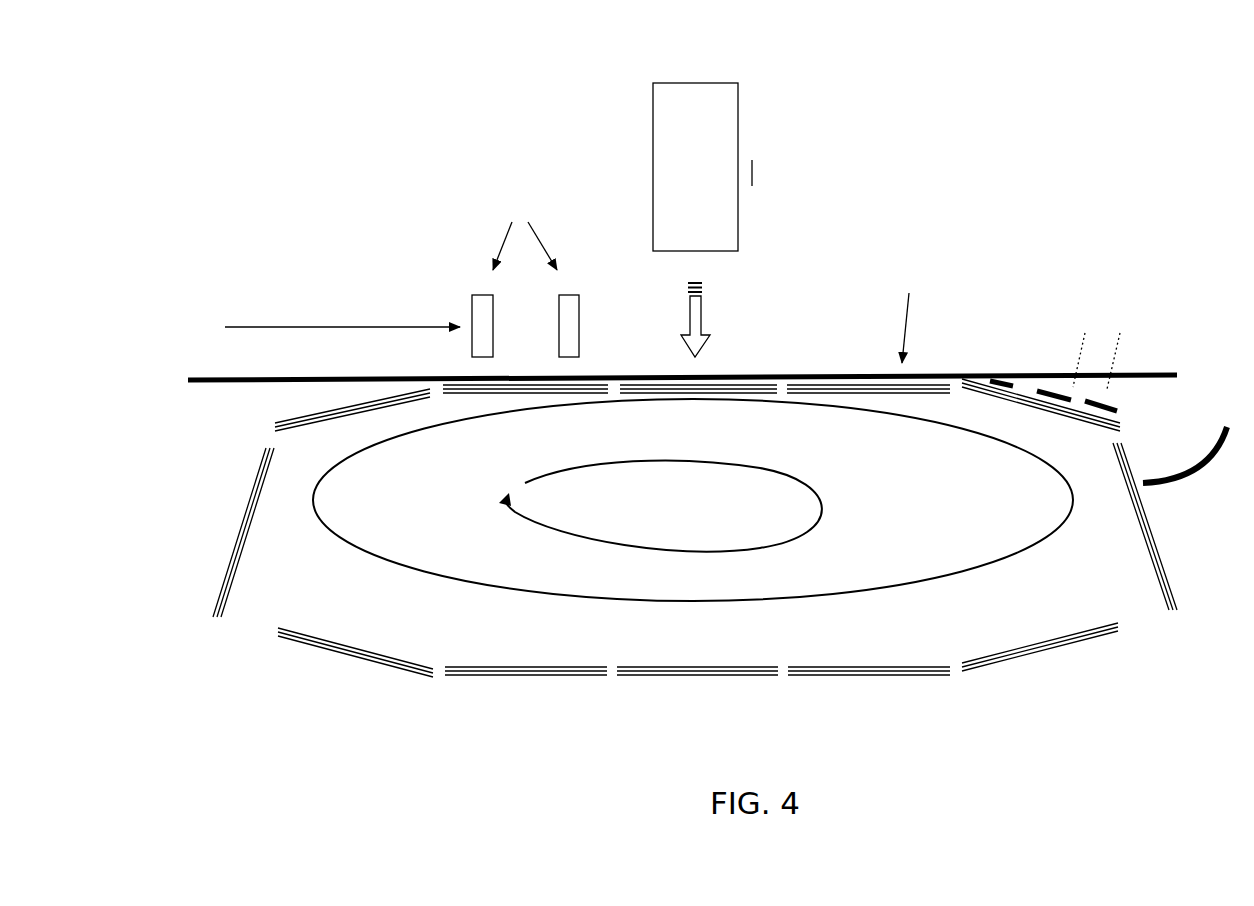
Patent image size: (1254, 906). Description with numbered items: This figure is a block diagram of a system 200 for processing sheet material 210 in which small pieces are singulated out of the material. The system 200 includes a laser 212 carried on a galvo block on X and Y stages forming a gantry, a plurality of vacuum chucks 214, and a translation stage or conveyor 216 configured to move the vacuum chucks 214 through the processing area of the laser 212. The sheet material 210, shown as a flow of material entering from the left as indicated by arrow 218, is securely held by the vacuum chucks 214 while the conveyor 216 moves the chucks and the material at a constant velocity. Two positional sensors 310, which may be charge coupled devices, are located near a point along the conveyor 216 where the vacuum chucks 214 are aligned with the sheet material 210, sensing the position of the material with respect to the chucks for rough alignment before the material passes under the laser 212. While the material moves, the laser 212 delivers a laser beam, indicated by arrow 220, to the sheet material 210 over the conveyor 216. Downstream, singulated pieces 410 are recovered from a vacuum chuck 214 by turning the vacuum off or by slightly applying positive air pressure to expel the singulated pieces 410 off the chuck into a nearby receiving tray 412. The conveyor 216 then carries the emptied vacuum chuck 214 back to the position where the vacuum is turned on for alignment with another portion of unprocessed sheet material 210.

The system 200 is at (424, 86).
The laser 212 is at (738, 100).
The arrow indicating laser beam 220 is at (702, 297).
The arrow indicating movement of sheet material 218 is at (417, 327).
The positional sensors 310 is at (558, 343).
The sheet material 210 is at (1165, 367).
The singulated pieces 410 is at (1067, 390).
The receiving tray 412 is at (1112, 563).
The vacuum chucks 214 is at (240, 527).
The conveyor 216 is at (336, 536).